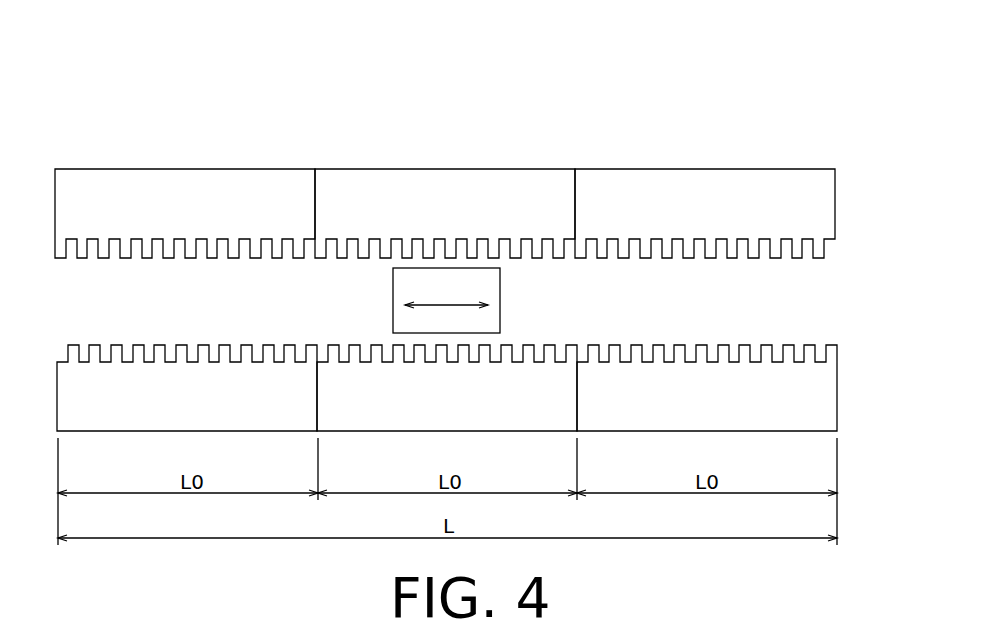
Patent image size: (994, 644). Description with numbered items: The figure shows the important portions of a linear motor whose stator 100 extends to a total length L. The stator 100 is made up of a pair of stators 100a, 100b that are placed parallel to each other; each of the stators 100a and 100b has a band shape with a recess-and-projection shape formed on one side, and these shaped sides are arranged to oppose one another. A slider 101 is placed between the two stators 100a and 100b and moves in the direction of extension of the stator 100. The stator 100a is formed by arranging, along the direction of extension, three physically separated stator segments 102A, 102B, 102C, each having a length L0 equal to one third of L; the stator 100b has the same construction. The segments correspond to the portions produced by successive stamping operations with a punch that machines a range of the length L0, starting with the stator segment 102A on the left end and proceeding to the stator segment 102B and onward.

The stator 100 is at (728, 82).
The stator 100a is at (588, 164).
The stator 100b is at (622, 328).
The slider 101 is at (502, 307).
The stator segment 102A is at (182, 195).
The stator segment 102B is at (435, 202).
The stator segment 102C is at (677, 203).